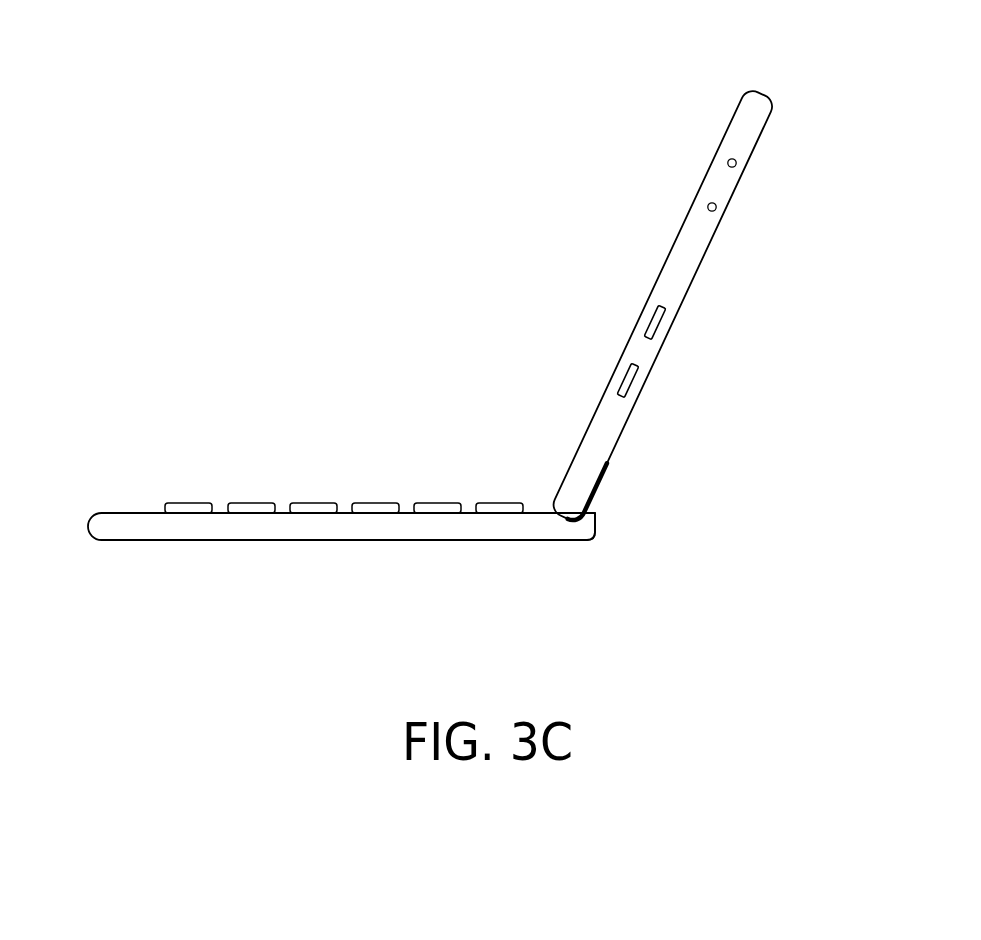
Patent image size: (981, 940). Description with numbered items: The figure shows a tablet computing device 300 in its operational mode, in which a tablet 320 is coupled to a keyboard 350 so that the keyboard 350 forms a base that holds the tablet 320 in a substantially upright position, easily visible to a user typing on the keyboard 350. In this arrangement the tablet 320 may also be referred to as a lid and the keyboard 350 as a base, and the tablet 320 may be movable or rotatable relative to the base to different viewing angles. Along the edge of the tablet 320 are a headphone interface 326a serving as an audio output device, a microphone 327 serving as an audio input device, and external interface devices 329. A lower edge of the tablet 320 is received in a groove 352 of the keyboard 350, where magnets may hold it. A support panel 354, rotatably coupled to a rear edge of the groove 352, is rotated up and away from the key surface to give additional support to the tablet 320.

The tablet computing device 300 is at (313, 200).
The tablet 320 is at (771, 78).
The headphone interface 326a is at (737, 163).
The microphone 327 is at (717, 207).
The external interface devices 329 is at (662, 321).
The support panel 354 is at (602, 482).
The keyboard 350 is at (100, 498).
The groove 352 is at (578, 519).